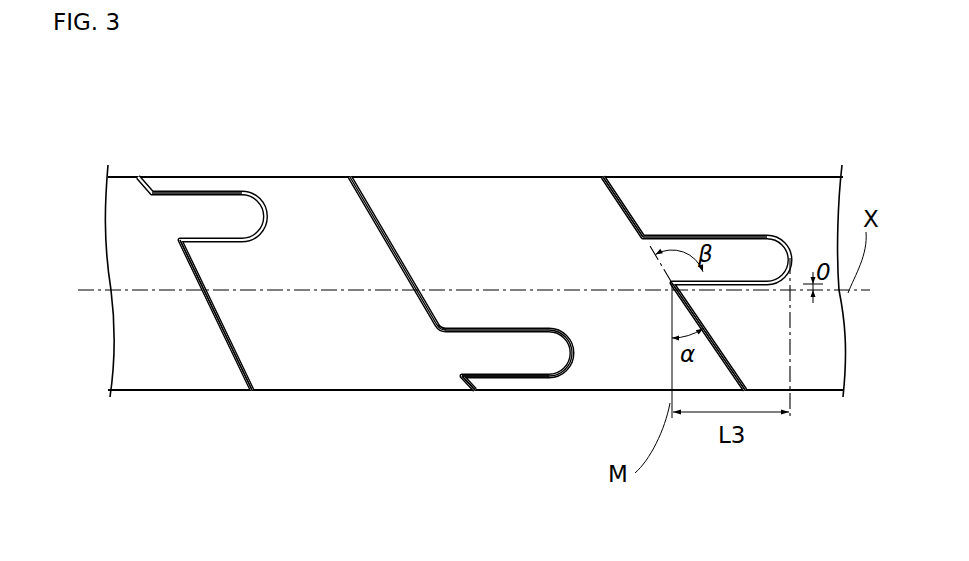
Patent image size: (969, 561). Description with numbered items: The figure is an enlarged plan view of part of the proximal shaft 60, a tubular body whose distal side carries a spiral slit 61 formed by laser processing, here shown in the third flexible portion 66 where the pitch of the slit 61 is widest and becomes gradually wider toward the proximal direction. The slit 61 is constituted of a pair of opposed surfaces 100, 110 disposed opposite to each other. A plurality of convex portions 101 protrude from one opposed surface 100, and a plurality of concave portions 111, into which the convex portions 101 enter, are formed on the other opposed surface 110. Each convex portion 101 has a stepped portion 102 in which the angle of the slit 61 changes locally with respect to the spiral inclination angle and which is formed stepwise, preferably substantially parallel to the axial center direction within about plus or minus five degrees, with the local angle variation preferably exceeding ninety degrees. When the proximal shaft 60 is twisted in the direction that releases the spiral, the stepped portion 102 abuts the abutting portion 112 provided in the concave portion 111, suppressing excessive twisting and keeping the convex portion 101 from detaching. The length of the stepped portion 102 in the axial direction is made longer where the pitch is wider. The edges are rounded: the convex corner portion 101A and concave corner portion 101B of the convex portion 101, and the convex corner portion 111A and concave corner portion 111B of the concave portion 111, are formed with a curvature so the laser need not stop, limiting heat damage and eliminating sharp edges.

The proximal shaft 60 is at (130, 153).
The third flexible portion 66 is at (180, 176).
The convex portion 101 is at (237, 189).
The concave portion 111 is at (289, 190).
The slit 61 is at (383, 190).
The opposed surface 110 is at (622, 205).
The opposed surface 100 is at (623, 210).
The corner portion 101A is at (560, 347).
The corner portion 101B is at (457, 375).
The corner portion 111A is at (443, 323).
The corner portion 111B is at (560, 378).
The stepped portion 102 is at (198, 233).
The abutting portion 112 is at (218, 248).